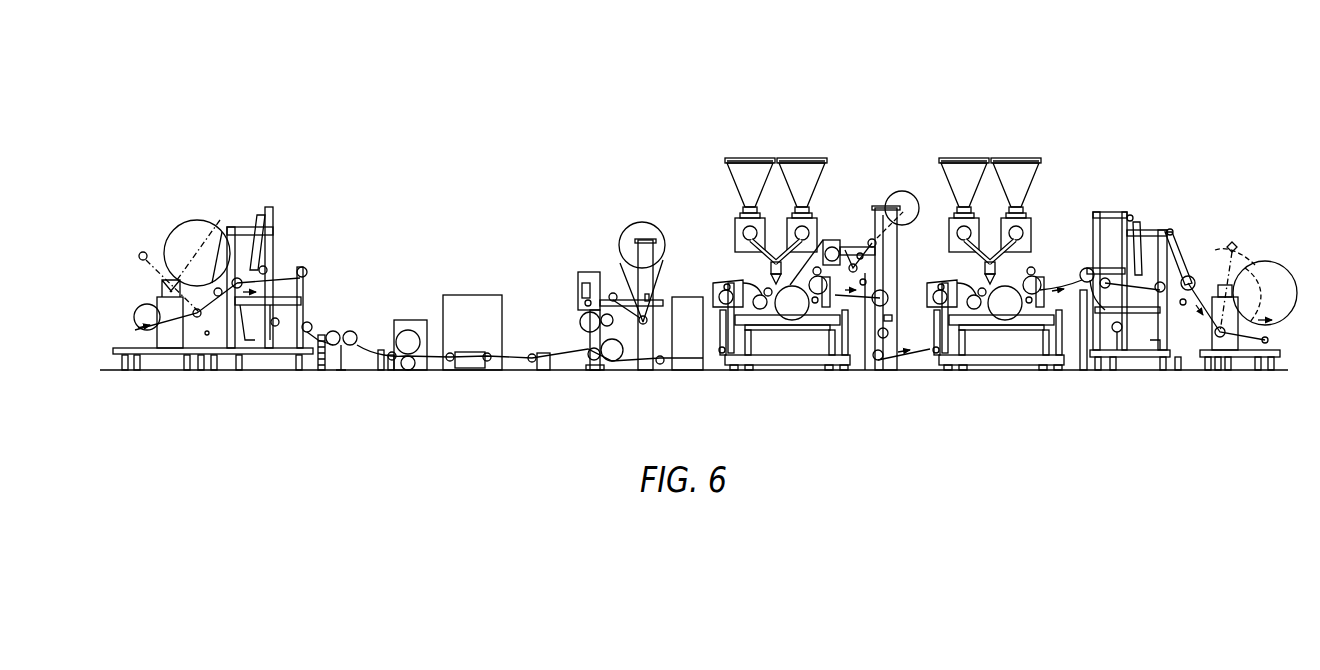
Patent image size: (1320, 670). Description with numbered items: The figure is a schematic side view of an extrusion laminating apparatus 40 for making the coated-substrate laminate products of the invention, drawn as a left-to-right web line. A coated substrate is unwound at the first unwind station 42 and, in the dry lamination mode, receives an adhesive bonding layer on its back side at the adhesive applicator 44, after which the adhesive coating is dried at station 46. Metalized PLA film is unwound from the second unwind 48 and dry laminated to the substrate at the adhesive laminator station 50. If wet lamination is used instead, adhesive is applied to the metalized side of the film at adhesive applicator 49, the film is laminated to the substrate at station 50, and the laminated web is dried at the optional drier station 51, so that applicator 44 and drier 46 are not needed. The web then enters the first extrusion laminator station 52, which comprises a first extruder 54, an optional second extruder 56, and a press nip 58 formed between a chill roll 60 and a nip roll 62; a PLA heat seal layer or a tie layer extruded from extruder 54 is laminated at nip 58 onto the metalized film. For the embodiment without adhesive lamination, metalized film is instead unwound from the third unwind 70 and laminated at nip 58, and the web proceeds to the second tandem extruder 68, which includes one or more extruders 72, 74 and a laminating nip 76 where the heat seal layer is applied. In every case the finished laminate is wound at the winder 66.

The extrusion laminating apparatus 40 is at (528, 151).
The first unwind station 42 is at (274, 172).
The adhesive applicator 44 is at (410, 320).
The drying station 46 is at (480, 295).
The second unwind 48 is at (640, 214).
The adhesive applicator 49 is at (582, 316).
The adhesive laminator station 50 is at (601, 382).
The drier station 51 is at (687, 382).
The first extrusion laminator station 52 is at (796, 238).
The first extruder 54 is at (746, 154).
The second extruder 56 is at (808, 154).
The press nip 58 is at (779, 342).
The chill roll 60 is at (798, 312).
The nip roll 62 is at (768, 296).
The winder 66 is at (1258, 237).
The second tandem extruder 68 is at (1004, 228).
The third unwind 70 is at (898, 194).
The extruder 72 is at (960, 154).
The extruder 74 is at (1021, 154).
The laminating nip 76 is at (992, 310).